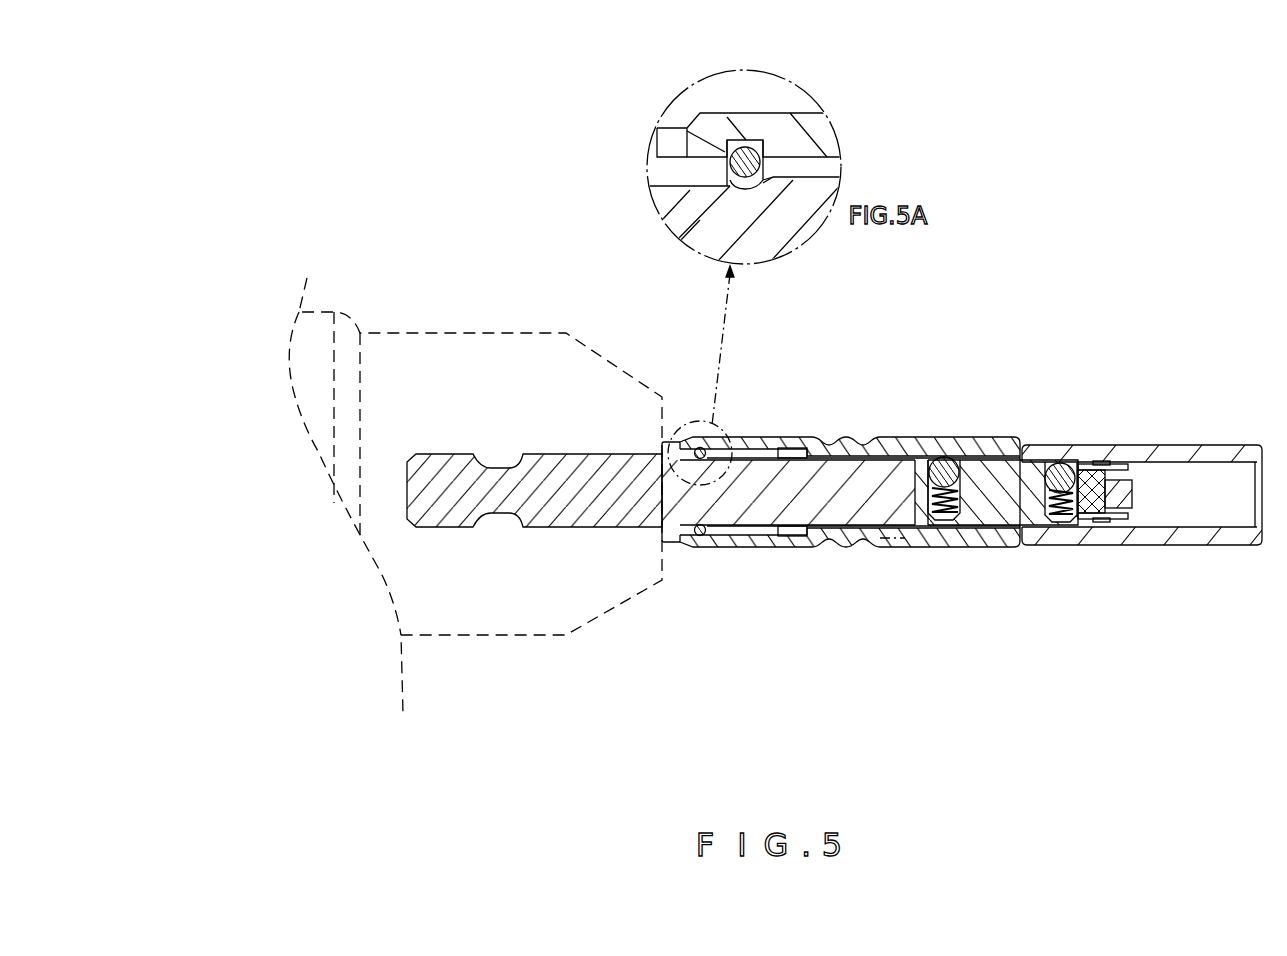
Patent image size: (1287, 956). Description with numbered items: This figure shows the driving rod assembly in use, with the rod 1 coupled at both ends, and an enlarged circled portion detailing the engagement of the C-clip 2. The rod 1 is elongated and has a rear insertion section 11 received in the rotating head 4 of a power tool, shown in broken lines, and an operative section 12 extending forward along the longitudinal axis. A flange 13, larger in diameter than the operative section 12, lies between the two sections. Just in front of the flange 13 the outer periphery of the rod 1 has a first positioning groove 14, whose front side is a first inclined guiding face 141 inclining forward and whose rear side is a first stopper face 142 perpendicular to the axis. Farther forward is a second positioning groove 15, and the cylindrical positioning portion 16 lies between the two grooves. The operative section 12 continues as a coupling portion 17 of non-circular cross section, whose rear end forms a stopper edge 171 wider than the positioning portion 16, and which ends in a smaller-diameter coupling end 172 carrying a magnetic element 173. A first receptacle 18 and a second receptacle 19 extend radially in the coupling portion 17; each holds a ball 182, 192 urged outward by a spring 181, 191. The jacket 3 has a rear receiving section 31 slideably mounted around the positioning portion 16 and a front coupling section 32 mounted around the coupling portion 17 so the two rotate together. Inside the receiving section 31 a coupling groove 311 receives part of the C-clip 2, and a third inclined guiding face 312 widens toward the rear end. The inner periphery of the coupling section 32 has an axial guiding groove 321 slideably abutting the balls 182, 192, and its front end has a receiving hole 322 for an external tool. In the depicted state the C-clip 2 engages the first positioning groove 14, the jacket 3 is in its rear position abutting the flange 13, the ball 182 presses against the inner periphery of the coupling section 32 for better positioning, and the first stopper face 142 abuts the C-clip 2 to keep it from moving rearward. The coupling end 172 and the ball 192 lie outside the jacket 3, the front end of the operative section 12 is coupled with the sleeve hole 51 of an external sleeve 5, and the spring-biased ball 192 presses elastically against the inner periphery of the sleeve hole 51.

In FIG. 5, the rod 1 is at (661, 501).
In FIG. 5A, the rod 1 is at (720, 234).
In FIG. 5, the insertion section 11 is at (595, 499).
In FIG. 5, the operative section 12 is at (800, 495).
In FIG. 5, the flange 13 is at (683, 545).
In FIG. 5A, the flange 13 is at (680, 146).
In FIG. 5A, the first positioning groove 14 is at (740, 186).
In FIG. 5A, the first inclined guiding face 141 is at (767, 184).
In FIG. 5A, the first stopper face 142 is at (732, 174).
In FIG. 5, the second positioning groove 15 is at (918, 463).
In FIG. 5, the positioning portion 16 is at (841, 497).
In FIG. 5, the coupling portion 17 is at (1007, 490).
In FIG. 5, the stopper edge 171 is at (893, 537).
In FIG. 5, the coupling end 172 is at (1120, 465).
In FIG. 5, the magnetic element 173 is at (1118, 507).
In FIG. 5, the first receptacle 18 is at (940, 490).
In FIG. 5, the spring 181 is at (952, 500).
In FIG. 5, the ball 182 is at (943, 460).
In FIG. 5, the second receptacle 19 is at (1062, 496).
In FIG. 5, the spring 191 is at (1070, 505).
In FIG. 5, the ball 192 is at (1073, 462).
In FIG. 5A, the C-clip 2 is at (748, 160).
In FIG. 5, the jacket 3 is at (845, 479).
In FIG. 5A, the jacket 3 is at (719, 116).
In FIG. 5, the receiving section 31 is at (753, 447).
In FIG. 5A, the coupling groove 311 is at (743, 140).
In FIG. 5A, the third inclined guiding face 312 is at (684, 157).
In FIG. 5, the coupling section 32 is at (920, 541).
In FIG. 5, the guiding groove 321 is at (978, 456).
In FIG. 5, the receiving hole 322 is at (1005, 461).
In FIG. 5, the rotating head 4 is at (490, 333).
In FIG. 5, the external sleeve 5 is at (1142, 496).
In FIG. 5, the sleeve hole 51 is at (1100, 461).